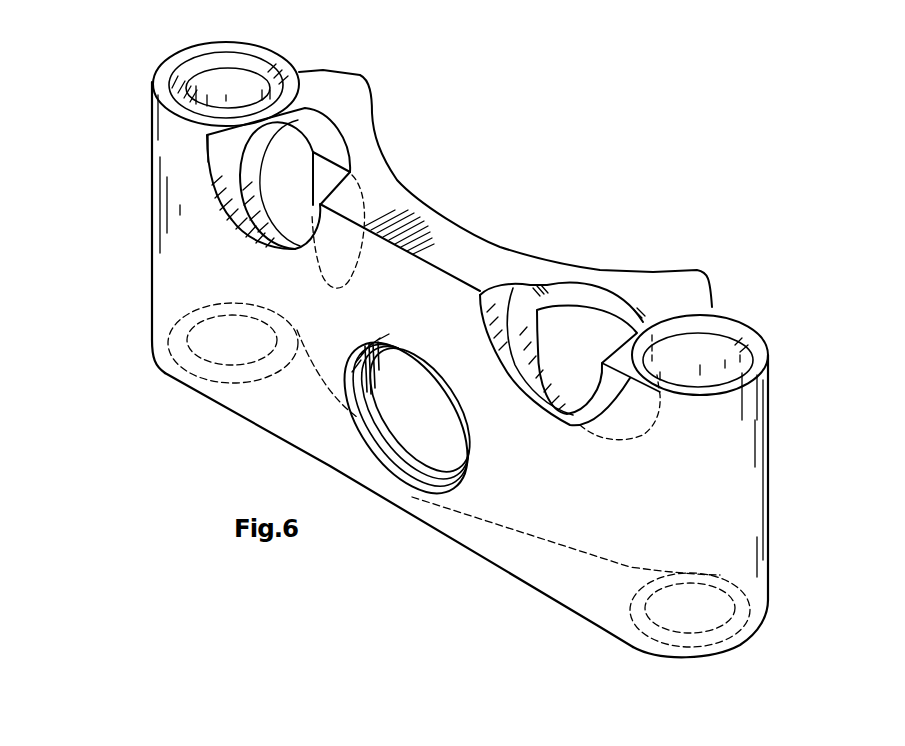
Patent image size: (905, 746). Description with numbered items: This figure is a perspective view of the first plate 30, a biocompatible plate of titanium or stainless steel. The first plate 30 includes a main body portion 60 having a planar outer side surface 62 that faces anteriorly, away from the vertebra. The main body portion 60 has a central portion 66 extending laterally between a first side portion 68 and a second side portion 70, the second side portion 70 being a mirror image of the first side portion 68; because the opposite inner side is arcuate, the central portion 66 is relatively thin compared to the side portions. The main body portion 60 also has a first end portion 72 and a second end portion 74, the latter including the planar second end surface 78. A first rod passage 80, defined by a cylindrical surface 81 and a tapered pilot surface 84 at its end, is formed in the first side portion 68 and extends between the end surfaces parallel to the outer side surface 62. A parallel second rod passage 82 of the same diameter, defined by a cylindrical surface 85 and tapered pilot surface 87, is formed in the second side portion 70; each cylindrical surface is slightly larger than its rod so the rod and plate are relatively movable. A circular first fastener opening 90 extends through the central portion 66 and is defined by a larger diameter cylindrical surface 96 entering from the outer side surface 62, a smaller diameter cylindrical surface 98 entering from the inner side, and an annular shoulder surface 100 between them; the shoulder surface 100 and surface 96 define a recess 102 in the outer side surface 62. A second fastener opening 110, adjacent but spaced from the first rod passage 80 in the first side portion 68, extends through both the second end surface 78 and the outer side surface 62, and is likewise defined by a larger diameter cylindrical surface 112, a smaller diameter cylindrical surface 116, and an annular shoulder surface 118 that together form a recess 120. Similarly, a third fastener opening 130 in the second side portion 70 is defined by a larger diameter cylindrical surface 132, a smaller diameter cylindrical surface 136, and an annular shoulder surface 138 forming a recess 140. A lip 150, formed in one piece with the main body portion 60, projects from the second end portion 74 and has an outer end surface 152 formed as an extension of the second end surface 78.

The first plate 30 is at (634, 156).
The main body portion 60 is at (247, 419).
The planar outer side surface 62 is at (517, 493).
The central portion 66 is at (530, 580).
The first side portion 68 is at (147, 298).
The second side portion 70 is at (772, 495).
The first end portion 72 is at (169, 394).
The second end portion 74 is at (478, 217).
The second end surface 78 is at (482, 277).
The first rod passage 80 is at (238, 97).
The cylindrical surface 81 is at (251, 85).
The tapered pilot surface 84 is at (272, 76).
The second rod passage 82 is at (683, 367).
The cylindrical surface 85 is at (687, 367).
The tapered pilot surface 87 is at (703, 357).
The first fastener opening 90 is at (410, 337).
The larger diameter cylindrical surface 96 is at (390, 456).
The smaller diameter cylindrical surface 98 is at (409, 440).
The annular shoulder surface 100 is at (437, 474).
The recess 102 is at (357, 423).
The second fastener opening 110 is at (337, 127).
The larger diameter cylindrical surface 112 is at (228, 152).
The smaller diameter cylindrical surface 116 is at (280, 230).
The annular shoulder surface 118 is at (242, 218).
The recess 120 is at (238, 185).
The third fastener opening 130 is at (562, 432).
The larger diameter cylindrical surface 132 is at (503, 309).
The smaller diameter cylindrical surface 136 is at (597, 300).
The annular shoulder surface 138 is at (530, 307).
The recess 140 is at (496, 347).
The lip 150 is at (435, 211).
The outer end surface 152 is at (387, 193).